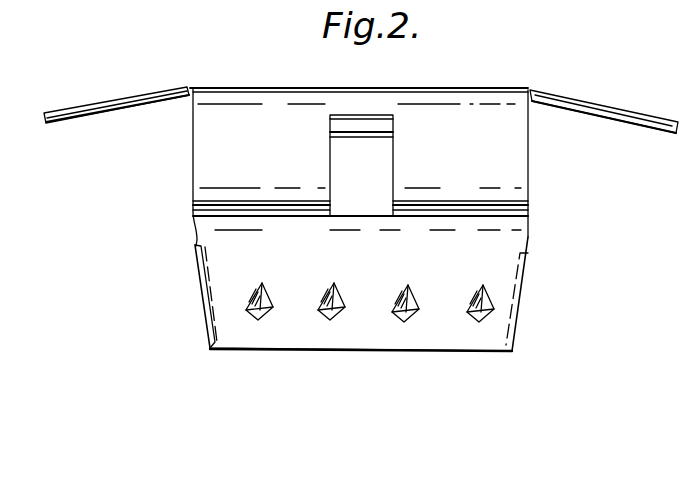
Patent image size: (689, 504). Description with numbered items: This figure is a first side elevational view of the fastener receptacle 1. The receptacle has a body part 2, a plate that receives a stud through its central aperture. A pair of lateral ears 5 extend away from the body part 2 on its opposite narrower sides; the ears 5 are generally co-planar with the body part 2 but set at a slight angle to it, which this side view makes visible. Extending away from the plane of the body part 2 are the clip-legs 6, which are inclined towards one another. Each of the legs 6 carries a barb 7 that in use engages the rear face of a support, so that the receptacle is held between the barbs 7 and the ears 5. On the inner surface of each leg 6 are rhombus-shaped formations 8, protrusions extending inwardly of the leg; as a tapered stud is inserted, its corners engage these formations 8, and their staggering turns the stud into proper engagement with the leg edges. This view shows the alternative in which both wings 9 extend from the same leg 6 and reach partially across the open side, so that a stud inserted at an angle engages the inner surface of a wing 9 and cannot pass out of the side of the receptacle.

The fastener receptacle 1 is at (530, 83).
The body part 2 is at (203, 88).
The lateral ears 5 is at (93, 118).
The clip-legs 6 is at (217, 165).
The barb 7 is at (378, 150).
The rhombus-shaped formations 8 is at (330, 320).
The wing 9 is at (198, 284).